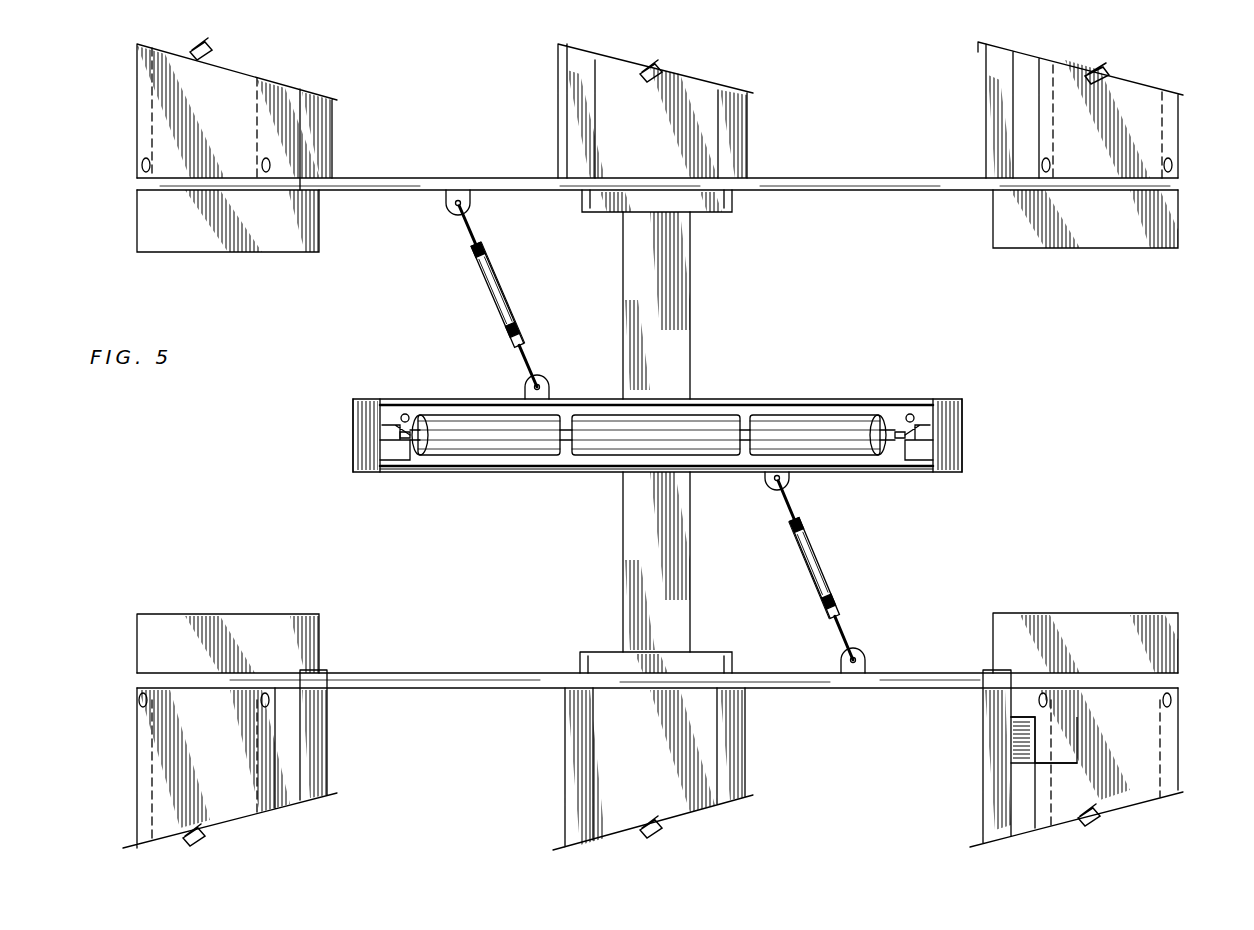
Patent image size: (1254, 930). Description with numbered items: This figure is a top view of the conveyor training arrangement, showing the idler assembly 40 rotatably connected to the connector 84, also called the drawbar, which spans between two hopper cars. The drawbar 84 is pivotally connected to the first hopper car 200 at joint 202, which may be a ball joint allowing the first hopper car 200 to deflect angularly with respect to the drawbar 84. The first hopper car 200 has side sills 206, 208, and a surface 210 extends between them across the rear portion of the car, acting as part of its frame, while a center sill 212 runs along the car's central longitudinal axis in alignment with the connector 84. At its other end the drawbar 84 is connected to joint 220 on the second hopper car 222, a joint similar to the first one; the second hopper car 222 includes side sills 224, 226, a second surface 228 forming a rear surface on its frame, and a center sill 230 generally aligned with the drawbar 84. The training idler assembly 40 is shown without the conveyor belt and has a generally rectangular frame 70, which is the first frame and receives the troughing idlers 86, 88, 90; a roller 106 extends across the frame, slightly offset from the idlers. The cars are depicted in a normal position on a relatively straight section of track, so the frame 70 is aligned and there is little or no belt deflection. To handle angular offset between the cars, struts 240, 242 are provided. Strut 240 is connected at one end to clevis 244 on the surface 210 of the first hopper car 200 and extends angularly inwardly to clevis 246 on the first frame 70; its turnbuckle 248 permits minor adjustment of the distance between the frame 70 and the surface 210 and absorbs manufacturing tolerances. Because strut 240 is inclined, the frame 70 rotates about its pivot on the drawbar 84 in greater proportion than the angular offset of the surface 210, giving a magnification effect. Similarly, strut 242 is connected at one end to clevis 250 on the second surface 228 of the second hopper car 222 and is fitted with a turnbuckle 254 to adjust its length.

The idler assembly 40 is at (968, 382).
The rectangular frame 70 is at (353, 440).
The connector 84 is at (690, 320).
The troughing idler 86 is at (515, 447).
The troughing idler 88 is at (668, 447).
The troughing idler 90 is at (833, 444).
The roller 106 is at (470, 472).
The first hopper car 200 is at (1180, 150).
The joint 202 is at (722, 212).
The side sill 206 is at (245, 252).
The side sill 208 is at (1095, 248).
The surface 210 is at (405, 178).
The center sill 212 is at (676, 143).
The joint 220 is at (703, 652).
The second hopper car 222 is at (1180, 735).
The side sill 224 is at (265, 614).
The side sill 226 is at (1050, 613).
The second surface 228 is at (435, 673).
The center sill 230 is at (676, 755).
The strut 240 is at (500, 290).
The strut 242 is at (835, 568).
The clevis 244 is at (452, 208).
The clevis 246 is at (525, 386).
The turnbuckle 248 is at (490, 312).
The clevis 250 is at (866, 662).
The turnbuckle 254 is at (806, 580).